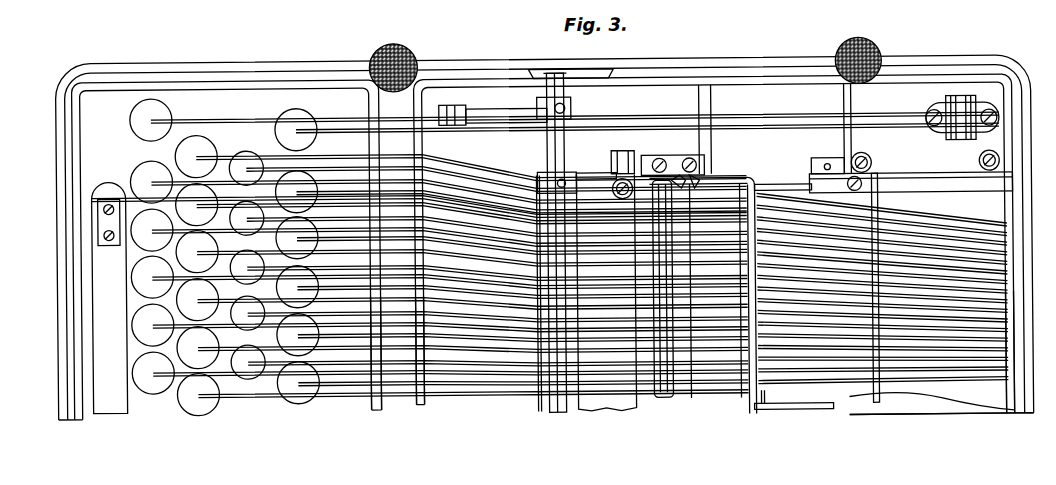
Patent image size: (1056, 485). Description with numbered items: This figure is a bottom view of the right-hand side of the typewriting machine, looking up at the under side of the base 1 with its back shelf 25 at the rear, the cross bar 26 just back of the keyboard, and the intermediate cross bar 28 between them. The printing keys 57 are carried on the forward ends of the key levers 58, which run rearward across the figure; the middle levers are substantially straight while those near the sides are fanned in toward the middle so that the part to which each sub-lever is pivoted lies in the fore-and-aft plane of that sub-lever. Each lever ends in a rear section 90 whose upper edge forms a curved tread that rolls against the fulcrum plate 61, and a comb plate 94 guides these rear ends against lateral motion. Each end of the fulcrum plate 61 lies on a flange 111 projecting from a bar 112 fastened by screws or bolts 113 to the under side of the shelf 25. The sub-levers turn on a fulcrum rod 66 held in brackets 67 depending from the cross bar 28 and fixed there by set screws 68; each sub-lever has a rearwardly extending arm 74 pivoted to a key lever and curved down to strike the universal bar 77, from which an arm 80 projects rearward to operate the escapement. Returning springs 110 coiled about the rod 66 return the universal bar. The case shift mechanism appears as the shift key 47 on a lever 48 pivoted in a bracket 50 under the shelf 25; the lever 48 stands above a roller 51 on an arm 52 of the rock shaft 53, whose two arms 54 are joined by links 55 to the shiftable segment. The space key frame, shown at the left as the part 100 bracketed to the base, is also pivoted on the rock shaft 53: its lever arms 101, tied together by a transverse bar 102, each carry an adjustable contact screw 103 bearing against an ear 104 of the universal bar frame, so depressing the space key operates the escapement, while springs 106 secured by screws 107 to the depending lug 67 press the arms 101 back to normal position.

The base 1 is at (478, 68).
The back shelf 25 is at (852, 104).
The cross bar 26 is at (424, 410).
The cross bar 28 is at (708, 108).
The shift key 47 is at (173, 115).
The lever 48 is at (613, 119).
The bracket 50 is at (972, 105).
The roller 51 is at (466, 106).
The arm 52 is at (506, 115).
The rock shaft 53 is at (548, 149).
The arms 54 is at (592, 181).
The link 55 is at (630, 155).
The printing keys 57 is at (170, 157).
The key levers 58 is at (366, 385).
The fulcrum plate 61 is at (772, 191).
The fulcrum rod 66 is at (658, 161).
The brackets 67 is at (683, 162).
The set screws 68 is at (662, 162).
The rearwardly extending arm 74 is at (712, 372).
The universal bar 77 is at (748, 403).
The arm 80 is at (800, 417).
The rear section 90 is at (958, 244).
The comb plate 94 is at (880, 210).
The bracket 100 is at (109, 297).
The lever arms 101 is at (133, 197).
The transverse bar 102 is at (537, 409).
The adjustable contact screw 103 is at (620, 184).
The ear 104 is at (542, 178).
The springs 106 is at (705, 186).
The screws 107 is at (700, 185).
The returning springs 110 is at (678, 192).
The flange 111 is at (822, 166).
The bar 112 is at (905, 181).
The screws or bolts 113 is at (868, 162).